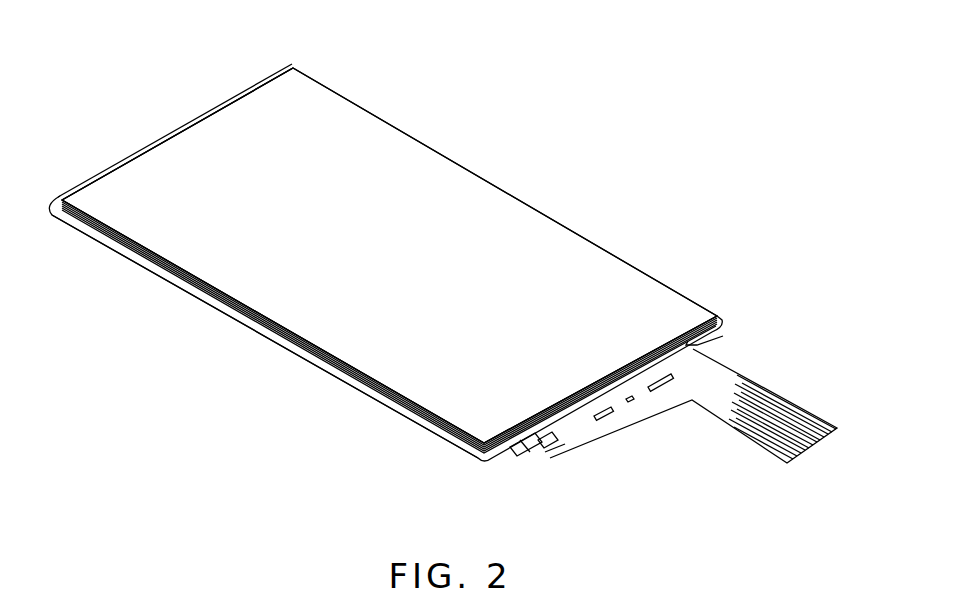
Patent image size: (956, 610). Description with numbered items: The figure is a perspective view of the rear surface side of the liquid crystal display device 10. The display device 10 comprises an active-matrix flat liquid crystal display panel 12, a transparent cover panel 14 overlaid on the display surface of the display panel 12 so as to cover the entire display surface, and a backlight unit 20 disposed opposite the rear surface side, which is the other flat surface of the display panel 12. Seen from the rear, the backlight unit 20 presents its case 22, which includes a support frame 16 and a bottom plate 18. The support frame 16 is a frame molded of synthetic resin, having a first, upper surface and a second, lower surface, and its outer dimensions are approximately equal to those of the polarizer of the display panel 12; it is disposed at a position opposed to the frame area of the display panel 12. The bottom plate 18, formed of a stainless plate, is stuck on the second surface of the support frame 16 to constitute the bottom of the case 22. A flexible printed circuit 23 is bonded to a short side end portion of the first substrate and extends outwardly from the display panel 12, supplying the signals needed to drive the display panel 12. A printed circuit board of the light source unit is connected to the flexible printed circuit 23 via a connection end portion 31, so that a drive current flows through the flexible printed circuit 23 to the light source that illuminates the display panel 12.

The display device 10 is at (385, 269).
The display panel 12 is at (184, 290).
The transparent cover panel 14 is at (393, 412).
The support frame 16 is at (131, 253).
The bottom plate 18 is at (364, 127).
The backlight unit 20 is at (521, 222).
The case 22 is at (435, 179).
The flexible printed circuit 23 is at (655, 400).
The connection end portion 31 is at (525, 447).